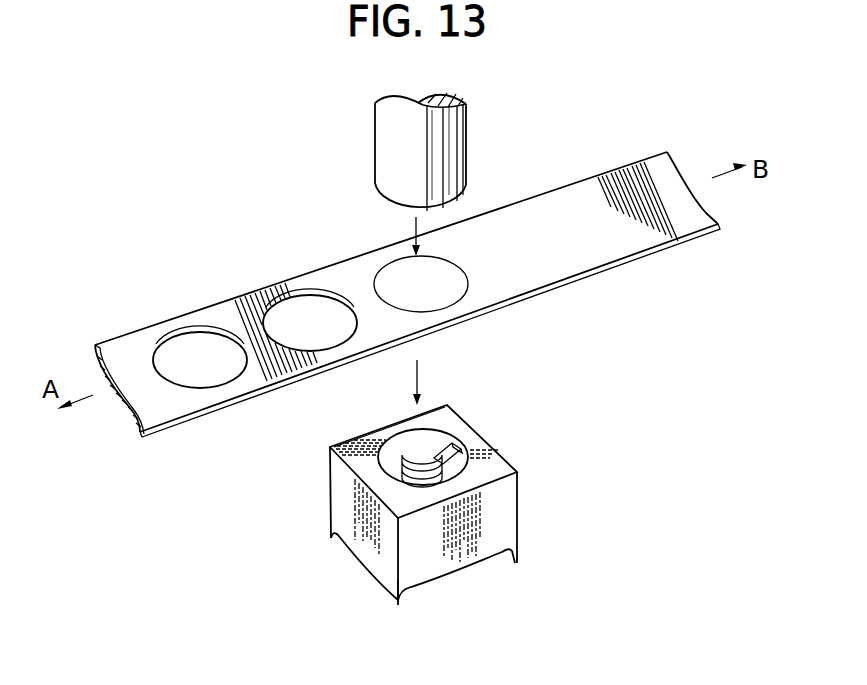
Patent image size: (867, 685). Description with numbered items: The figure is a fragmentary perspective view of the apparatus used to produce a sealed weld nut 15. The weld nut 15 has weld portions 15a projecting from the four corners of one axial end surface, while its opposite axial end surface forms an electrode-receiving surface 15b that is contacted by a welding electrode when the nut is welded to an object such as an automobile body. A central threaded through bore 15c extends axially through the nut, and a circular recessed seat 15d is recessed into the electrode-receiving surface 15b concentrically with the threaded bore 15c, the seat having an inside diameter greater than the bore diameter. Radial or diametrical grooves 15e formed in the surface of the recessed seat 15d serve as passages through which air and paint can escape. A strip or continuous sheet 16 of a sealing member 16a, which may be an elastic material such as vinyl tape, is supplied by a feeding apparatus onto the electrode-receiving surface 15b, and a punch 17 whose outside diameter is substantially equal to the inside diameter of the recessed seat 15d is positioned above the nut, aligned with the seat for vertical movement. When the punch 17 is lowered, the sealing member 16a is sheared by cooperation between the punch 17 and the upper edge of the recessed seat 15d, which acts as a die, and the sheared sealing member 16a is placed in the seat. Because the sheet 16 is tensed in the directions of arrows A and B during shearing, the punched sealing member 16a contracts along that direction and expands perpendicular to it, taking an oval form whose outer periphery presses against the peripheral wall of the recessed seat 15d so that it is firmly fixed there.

The sealed weld nut 15 is at (433, 502).
The weld portions 15a is at (400, 599).
The electrode-receiving surface 15b is at (503, 467).
The threaded through bore 15c is at (465, 450).
The recessed seat 15d is at (350, 432).
The radial grooves 15e is at (440, 455).
The strip or continuous sheet 16 is at (660, 237).
The sealing member 16a is at (467, 288).
The punch 17 is at (466, 136).